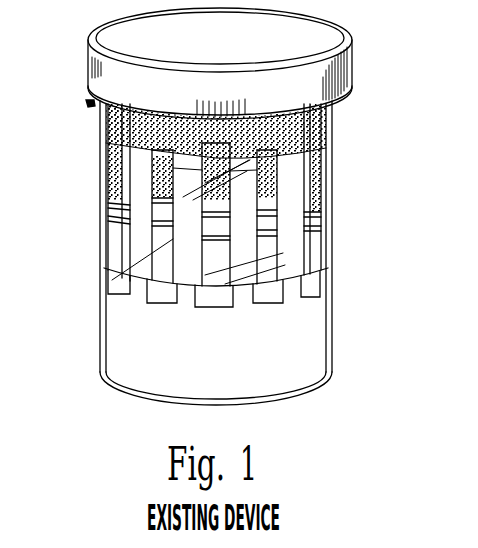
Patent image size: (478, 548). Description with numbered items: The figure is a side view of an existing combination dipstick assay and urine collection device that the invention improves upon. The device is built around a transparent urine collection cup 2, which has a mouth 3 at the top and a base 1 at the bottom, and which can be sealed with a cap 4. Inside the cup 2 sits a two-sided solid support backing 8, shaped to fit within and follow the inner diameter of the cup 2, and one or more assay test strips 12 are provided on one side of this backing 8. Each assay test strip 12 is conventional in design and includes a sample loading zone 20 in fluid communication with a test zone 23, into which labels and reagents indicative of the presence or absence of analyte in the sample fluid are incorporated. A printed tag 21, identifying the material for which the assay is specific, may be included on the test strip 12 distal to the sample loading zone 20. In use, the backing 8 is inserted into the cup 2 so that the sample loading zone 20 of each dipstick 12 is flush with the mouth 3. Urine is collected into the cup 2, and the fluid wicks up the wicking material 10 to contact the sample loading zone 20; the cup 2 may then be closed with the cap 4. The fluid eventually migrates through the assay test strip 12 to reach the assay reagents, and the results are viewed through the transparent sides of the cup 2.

The base 1 is at (301, 398).
The urine collection cup 2 is at (328, 174).
The mouth 3 is at (88, 103).
The cap 4 is at (330, 31).
The solid support backing 8 is at (289, 240).
The wicking material 10 is at (327, 125).
The assay test strip 12 is at (110, 278).
The sample loading zone 20 is at (150, 156).
The printed tag 21 is at (313, 284).
The test zone 23 is at (153, 221).